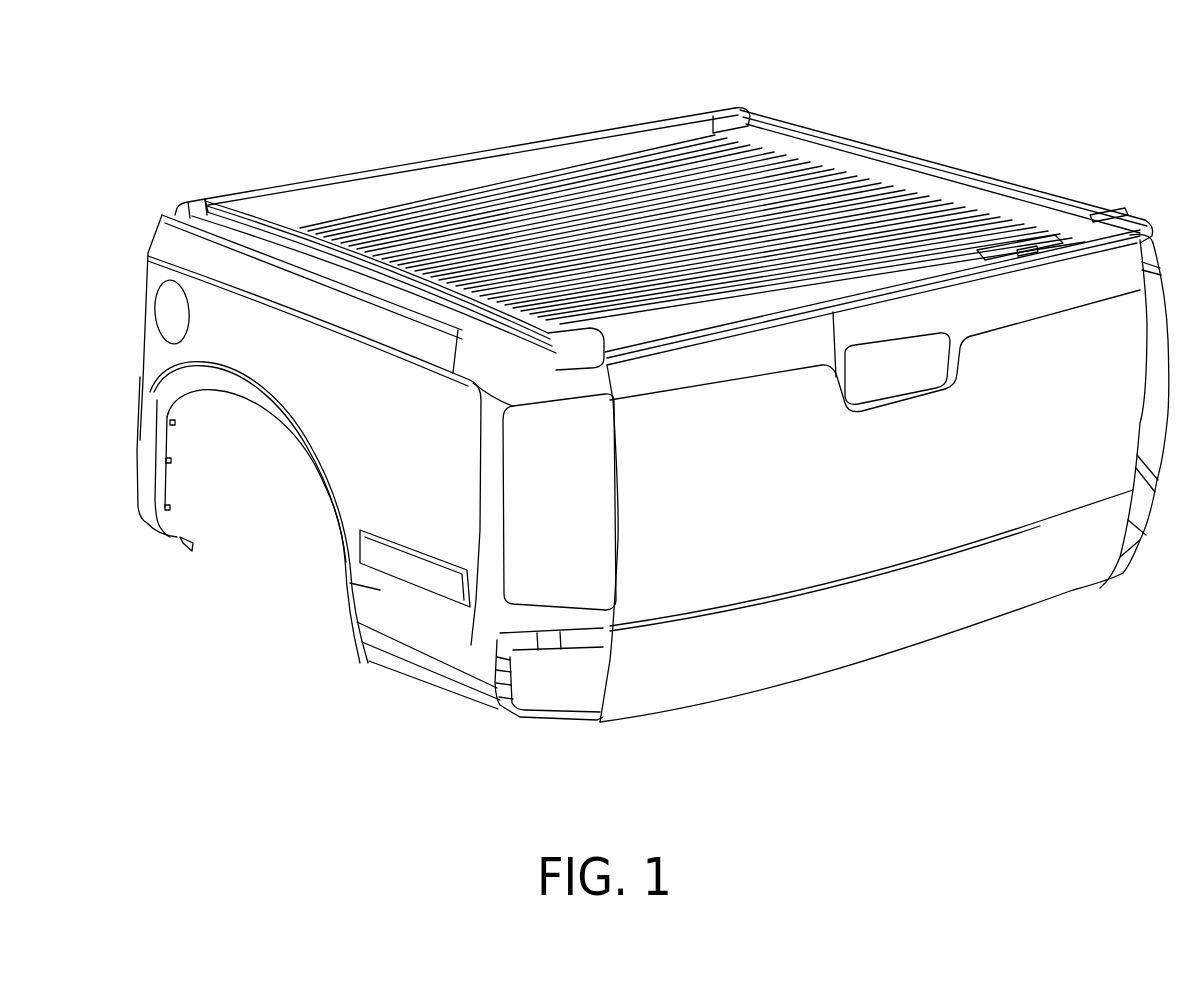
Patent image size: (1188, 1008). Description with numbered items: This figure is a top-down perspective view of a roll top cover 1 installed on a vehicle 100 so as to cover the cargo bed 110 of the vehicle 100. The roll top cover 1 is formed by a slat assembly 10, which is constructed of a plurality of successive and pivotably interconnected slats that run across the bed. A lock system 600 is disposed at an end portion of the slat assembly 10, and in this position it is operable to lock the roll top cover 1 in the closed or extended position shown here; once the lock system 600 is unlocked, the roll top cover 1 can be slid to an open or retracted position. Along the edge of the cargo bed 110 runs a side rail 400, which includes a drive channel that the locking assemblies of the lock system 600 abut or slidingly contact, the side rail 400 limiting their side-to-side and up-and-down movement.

The roll top cover 1 is at (340, 134).
The slat assembly 10 is at (798, 163).
The vehicle 100 is at (905, 683).
The cargo bed 110 is at (988, 75).
The side rail 400 is at (232, 203).
The lock system 600 is at (1094, 236).